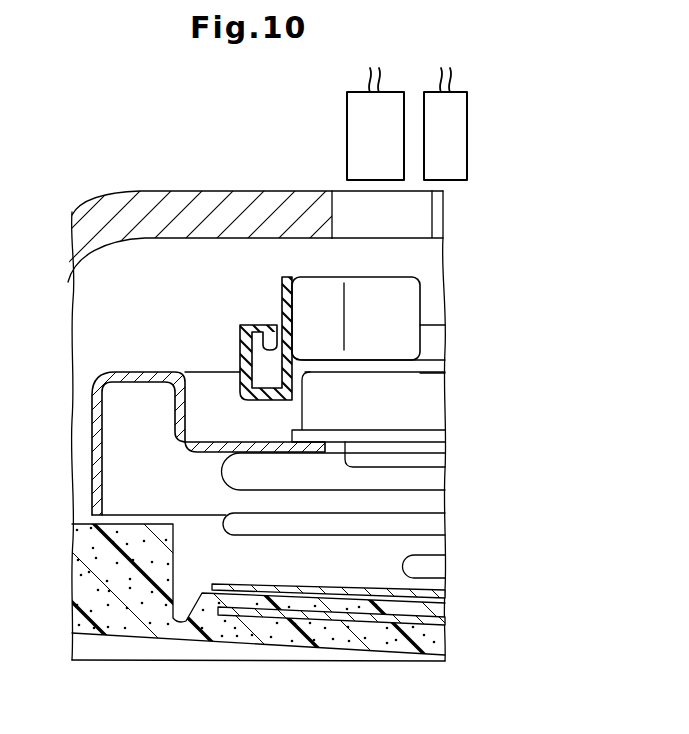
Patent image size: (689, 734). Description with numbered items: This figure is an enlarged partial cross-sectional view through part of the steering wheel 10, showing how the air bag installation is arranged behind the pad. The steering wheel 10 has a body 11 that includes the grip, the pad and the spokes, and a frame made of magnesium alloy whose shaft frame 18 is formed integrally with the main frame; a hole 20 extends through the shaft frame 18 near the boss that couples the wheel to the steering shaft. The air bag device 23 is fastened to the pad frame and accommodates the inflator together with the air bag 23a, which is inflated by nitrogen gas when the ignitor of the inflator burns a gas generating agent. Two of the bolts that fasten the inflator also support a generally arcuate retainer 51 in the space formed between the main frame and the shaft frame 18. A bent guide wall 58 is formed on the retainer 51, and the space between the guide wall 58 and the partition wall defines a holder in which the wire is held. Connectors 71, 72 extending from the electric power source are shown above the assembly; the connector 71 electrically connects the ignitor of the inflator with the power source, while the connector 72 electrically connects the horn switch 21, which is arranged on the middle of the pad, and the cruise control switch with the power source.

The steering wheel 10 is at (509, 291).
The body 11 is at (427, 668).
The shaft frame 18 is at (135, 191).
The hole 20 is at (438, 217).
The horn switch 21 is at (420, 593).
The air bag device 23 is at (203, 372).
The air bag 23a is at (425, 485).
The retainer 51 is at (363, 277).
The guide wall 58 is at (294, 303).
The connector 71 is at (347, 148).
The connector 72 is at (467, 145).